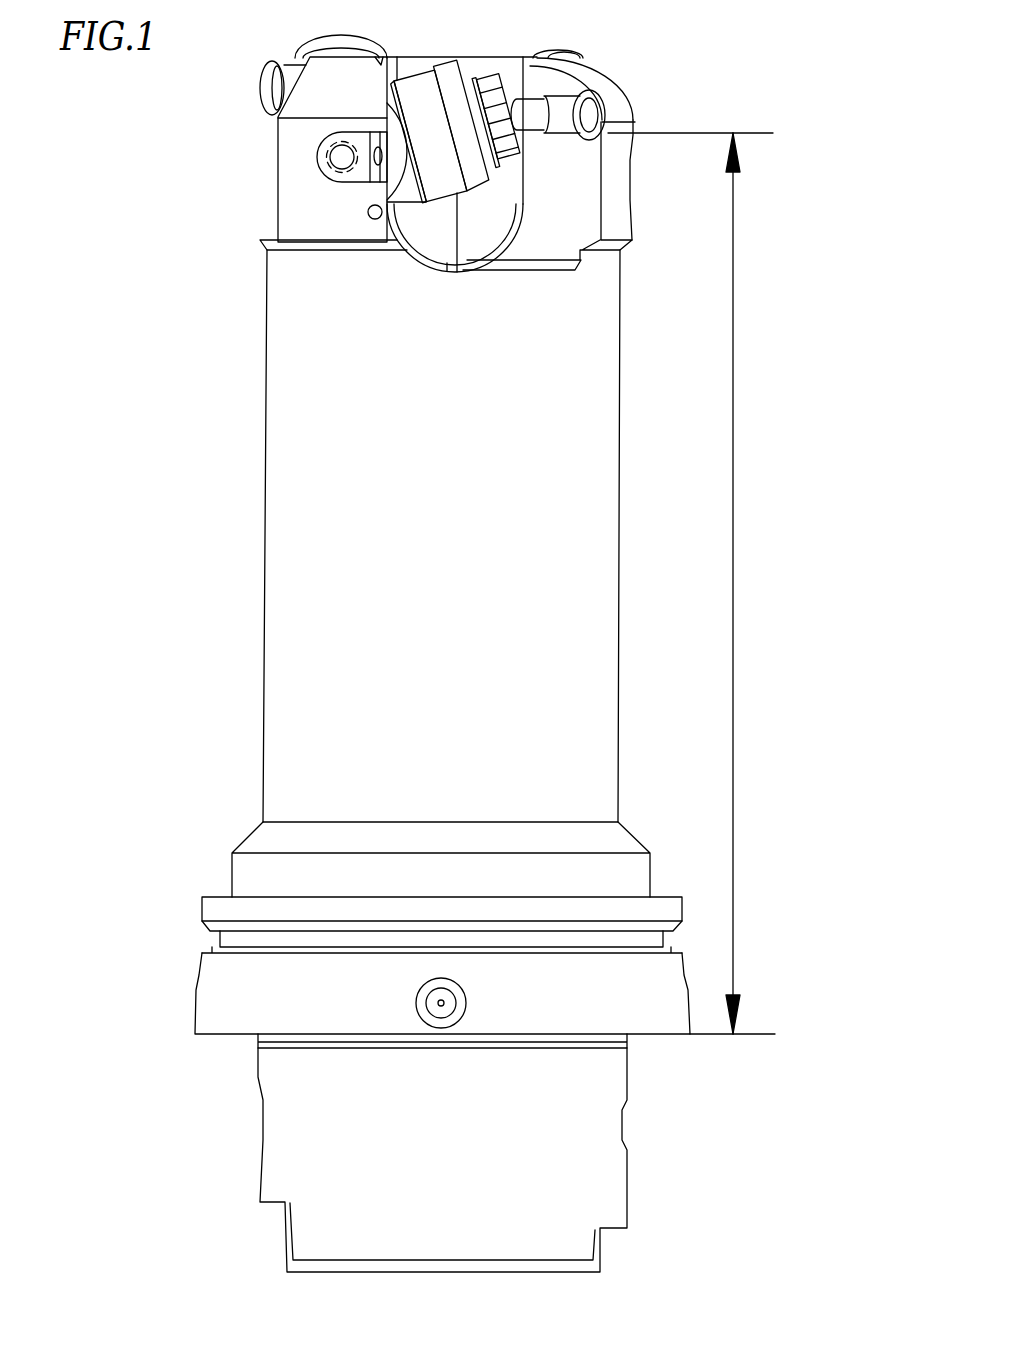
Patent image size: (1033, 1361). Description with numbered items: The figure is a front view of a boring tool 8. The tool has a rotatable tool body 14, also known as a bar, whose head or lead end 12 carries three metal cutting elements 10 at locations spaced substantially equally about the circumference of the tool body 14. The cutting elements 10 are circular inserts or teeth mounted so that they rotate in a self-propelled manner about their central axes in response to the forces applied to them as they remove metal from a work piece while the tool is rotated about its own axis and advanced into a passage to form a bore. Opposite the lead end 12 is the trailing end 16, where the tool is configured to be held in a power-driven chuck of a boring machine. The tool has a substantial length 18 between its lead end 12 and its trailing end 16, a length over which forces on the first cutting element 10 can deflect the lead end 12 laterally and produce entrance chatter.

The boring tool 8 is at (226, 650).
The cutting elements 10 is at (327, 38).
The lead end 12 is at (298, 205).
The tool body 14 is at (577, 423).
The trailing end 16 is at (663, 988).
The length 18 is at (733, 578).